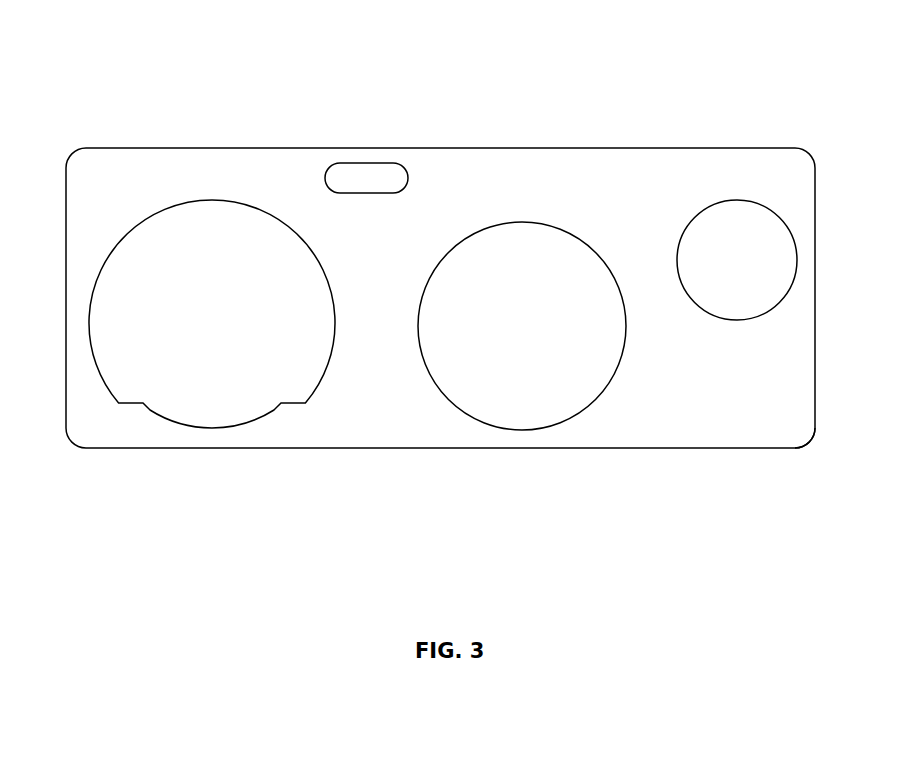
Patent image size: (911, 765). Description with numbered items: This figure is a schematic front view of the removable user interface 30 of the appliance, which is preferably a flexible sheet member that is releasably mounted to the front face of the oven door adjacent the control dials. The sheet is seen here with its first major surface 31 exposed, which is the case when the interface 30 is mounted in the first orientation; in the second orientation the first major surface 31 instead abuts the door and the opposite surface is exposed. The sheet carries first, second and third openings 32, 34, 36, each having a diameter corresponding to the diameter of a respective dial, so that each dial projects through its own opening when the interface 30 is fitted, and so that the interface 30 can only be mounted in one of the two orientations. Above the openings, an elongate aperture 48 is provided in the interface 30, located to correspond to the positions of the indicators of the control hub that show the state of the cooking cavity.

The user interface 30 is at (570, 167).
The first major surface 31 is at (778, 432).
The first opening 32 is at (112, 397).
The second opening 34 is at (482, 423).
The third opening 36 is at (797, 278).
The elongate aperture 48 is at (368, 163).